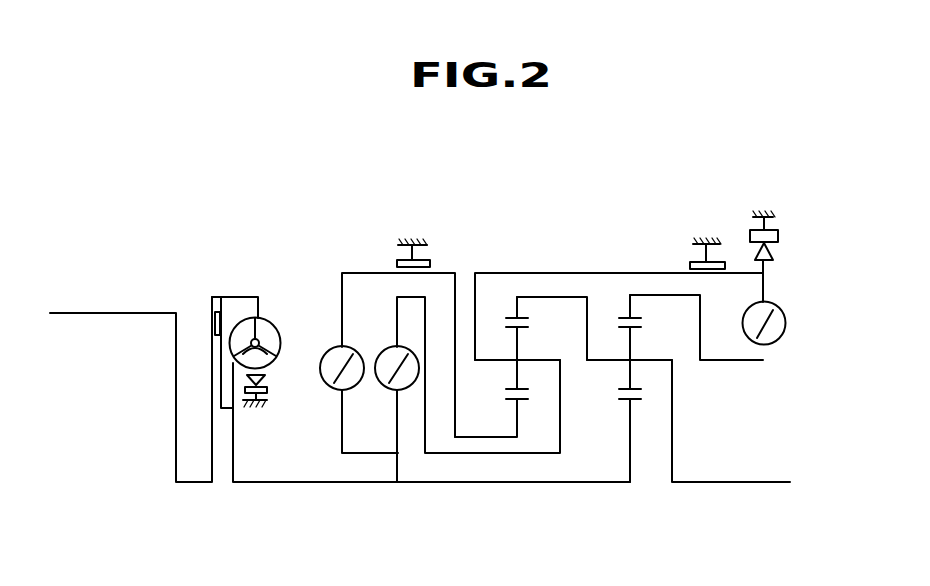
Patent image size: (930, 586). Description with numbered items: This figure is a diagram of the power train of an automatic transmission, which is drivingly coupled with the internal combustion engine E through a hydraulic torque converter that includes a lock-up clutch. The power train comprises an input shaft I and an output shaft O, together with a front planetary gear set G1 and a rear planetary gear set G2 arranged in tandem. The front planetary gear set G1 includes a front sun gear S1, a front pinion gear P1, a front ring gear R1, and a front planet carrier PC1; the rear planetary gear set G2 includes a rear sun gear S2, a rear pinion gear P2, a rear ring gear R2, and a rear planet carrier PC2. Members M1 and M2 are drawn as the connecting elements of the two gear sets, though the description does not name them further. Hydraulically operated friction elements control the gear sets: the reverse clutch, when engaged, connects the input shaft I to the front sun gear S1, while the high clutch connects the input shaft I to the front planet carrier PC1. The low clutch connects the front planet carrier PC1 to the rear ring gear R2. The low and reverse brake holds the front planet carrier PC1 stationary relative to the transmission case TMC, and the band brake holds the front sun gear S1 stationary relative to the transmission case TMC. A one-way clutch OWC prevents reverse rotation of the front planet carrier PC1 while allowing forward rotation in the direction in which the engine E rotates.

The internal combustion engine E is at (130, 323).
The input shaft I is at (283, 482).
The transmission case TMC is at (422, 257).
The front planetary gear set G1 is at (514, 292).
The first gear set member M1 is at (551, 297).
The front ring gear R1 is at (515, 308).
The front planet carrier PC1 is at (500, 361).
The front pinion gear P1 is at (513, 384).
The front sun gear S1 is at (514, 418).
The second gear set member M2 is at (553, 273).
The rear planetary gear set G2 is at (628, 293).
The rear ring gear R2 is at (628, 307).
The rear planet carrier PC2 is at (610, 360).
The rear pinion gear P2 is at (628, 381).
The rear sun gear S2 is at (628, 416).
The one-way clutch OWC is at (775, 258).
The output shaft O is at (733, 482).